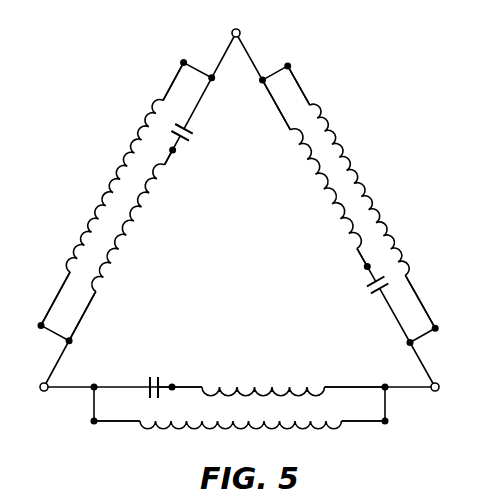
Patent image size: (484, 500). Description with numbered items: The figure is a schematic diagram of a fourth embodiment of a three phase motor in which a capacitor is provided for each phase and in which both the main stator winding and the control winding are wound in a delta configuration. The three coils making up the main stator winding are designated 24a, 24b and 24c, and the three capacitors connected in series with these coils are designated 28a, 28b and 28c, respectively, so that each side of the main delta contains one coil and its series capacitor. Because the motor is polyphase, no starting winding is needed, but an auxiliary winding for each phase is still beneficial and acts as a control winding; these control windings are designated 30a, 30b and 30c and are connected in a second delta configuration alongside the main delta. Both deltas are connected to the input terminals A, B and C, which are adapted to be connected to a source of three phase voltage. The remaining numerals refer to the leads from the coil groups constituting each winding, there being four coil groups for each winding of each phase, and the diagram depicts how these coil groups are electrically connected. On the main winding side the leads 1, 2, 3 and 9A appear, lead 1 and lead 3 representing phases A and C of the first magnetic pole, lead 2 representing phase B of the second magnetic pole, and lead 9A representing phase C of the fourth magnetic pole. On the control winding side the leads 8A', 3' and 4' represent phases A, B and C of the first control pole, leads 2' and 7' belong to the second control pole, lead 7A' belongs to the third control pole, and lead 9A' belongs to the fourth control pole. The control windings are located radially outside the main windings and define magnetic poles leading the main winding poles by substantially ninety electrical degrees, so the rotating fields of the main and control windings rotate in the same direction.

The input terminal A is at (241, 31).
The input terminal B is at (439, 392).
The input terminal C is at (42, 391).
The main winding coil group lead 1 is at (271, 104).
The main winding coil group lead 2 is at (355, 369).
The main winding coil group lead 3 is at (89, 316).
The control winding coil group lead 2' is at (429, 301).
The control winding coil group lead 3' is at (113, 442).
The control winding coil group lead 4' is at (44, 294).
The control winding coil group lead 7' is at (158, 75).
The control winding coil group lead 7A' is at (329, 256).
The control winding coil group lead 8A' is at (256, 221).
The main winding coil group lead 9A is at (184, 173).
The control winding coil group lead 9A' is at (387, 438).
The main stator coil 24a is at (119, 234).
The main stator coil 24b is at (314, 183).
The main stator coil 24c is at (294, 385).
The capacitor 28a is at (195, 140).
The capacitor 28b is at (364, 293).
The capacitor 28c is at (154, 372).
The control winding 30a is at (143, 121).
The control winding 30b is at (331, 124).
The control winding 30c is at (328, 428).